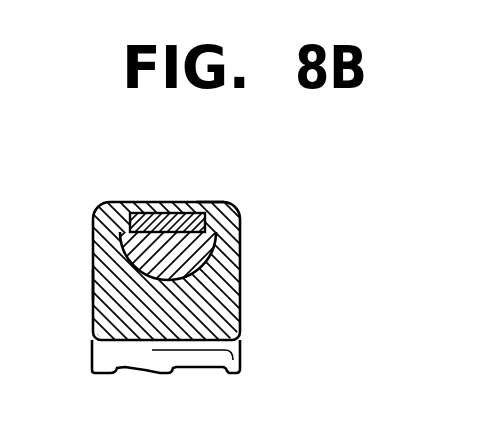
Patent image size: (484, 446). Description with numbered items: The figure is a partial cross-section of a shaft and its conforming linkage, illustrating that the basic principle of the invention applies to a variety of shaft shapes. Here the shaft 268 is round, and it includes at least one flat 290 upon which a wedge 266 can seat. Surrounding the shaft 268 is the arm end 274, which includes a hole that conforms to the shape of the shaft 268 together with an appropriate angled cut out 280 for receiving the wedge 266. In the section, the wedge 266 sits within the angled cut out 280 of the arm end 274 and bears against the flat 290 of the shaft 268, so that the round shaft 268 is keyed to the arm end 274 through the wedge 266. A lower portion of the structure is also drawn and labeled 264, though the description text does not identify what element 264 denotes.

The base member 264 is at (238, 358).
The wedge 266 is at (211, 201).
The shaft 268 is at (183, 272).
The arm end 274 is at (228, 218).
The angled cut out 280 is at (160, 212).
The flat 290 is at (118, 280).